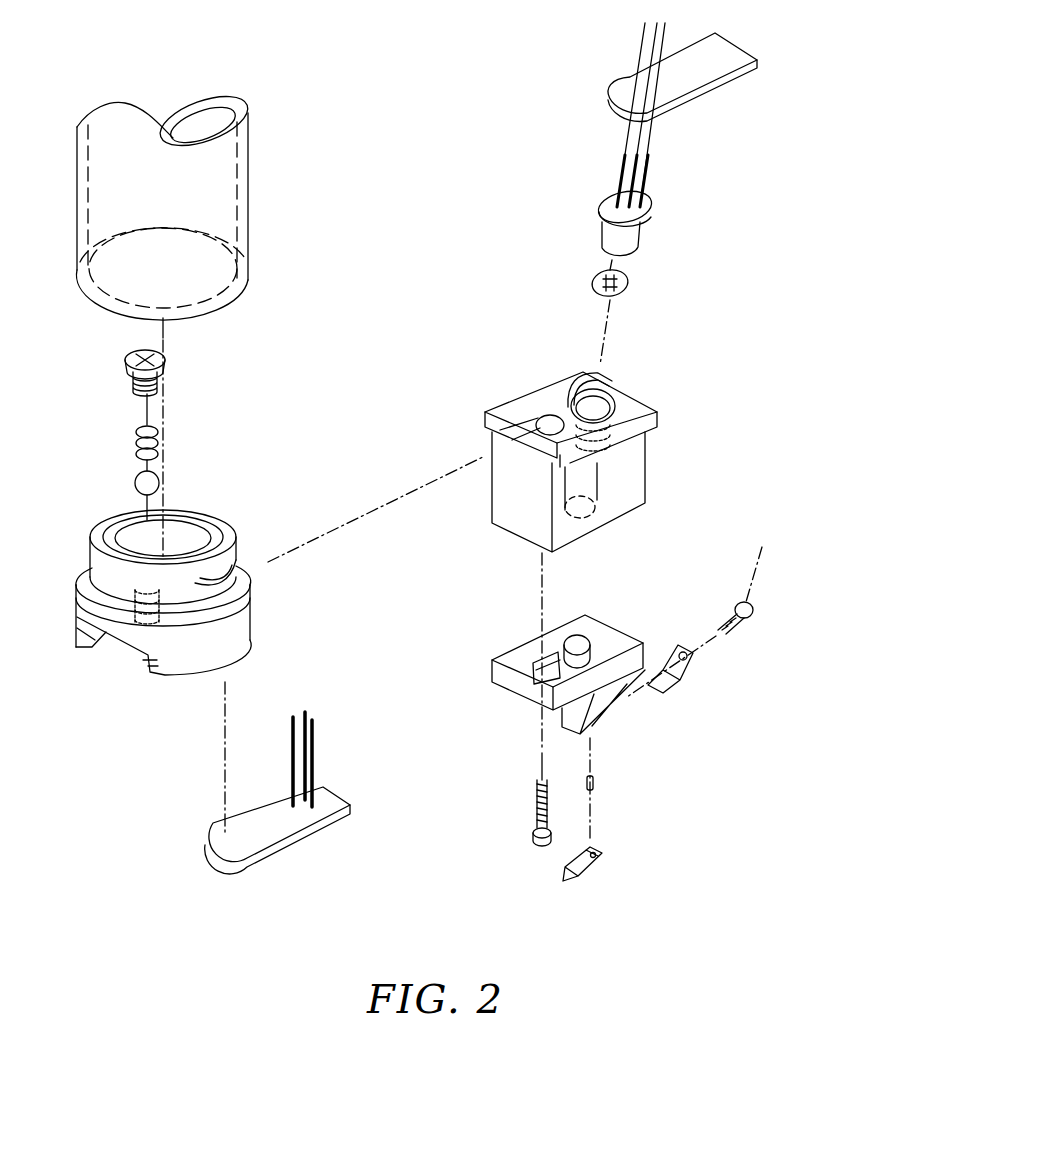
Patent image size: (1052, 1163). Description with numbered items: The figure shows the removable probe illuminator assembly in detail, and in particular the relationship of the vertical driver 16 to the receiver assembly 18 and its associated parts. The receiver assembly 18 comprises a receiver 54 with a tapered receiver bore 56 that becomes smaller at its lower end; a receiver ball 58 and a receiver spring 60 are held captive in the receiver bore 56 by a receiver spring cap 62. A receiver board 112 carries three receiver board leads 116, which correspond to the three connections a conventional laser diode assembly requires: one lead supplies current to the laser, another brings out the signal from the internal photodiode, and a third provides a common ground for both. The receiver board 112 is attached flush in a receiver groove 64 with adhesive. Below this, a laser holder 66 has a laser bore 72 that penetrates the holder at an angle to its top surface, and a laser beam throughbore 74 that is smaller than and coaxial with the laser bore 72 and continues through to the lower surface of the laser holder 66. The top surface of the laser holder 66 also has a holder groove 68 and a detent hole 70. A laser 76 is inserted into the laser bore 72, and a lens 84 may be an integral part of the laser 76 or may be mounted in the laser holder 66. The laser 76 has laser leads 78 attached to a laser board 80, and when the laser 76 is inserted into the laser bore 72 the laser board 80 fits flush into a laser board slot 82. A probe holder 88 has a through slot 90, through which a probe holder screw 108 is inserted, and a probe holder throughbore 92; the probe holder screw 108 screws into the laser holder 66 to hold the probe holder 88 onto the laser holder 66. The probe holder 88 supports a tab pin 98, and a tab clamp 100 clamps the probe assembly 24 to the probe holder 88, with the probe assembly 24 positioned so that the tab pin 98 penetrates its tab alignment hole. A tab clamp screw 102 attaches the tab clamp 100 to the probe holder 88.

The vertical driver 16 is at (250, 187).
The receiver assembly 18 is at (240, 500).
The probe assembly 24 is at (630, 845).
The receiver 54 is at (194, 583).
The receiver bore 56 is at (130, 590).
The receiver ball 58 is at (135, 483).
The receiver spring 60 is at (135, 448).
The receiver spring cap 62 is at (127, 363).
The receiver groove 64 is at (212, 578).
The laser holder 66 is at (581, 441).
The holder groove 68 is at (536, 418).
The detent hole 70 is at (557, 417).
The laser bore 72 is at (613, 393).
The laser beam throughbore 74 is at (600, 463).
The laser 76 is at (642, 238).
The laser leads 78 is at (645, 180).
The laser board 80 is at (704, 115).
The laser board slot 82 is at (587, 395).
The lens 84 is at (628, 282).
The probe holder 88 is at (579, 656).
The through slot 90 is at (540, 660).
The probe holder throughbore 92 is at (580, 637).
The tab pin 98 is at (597, 780).
The tab clamp 100 is at (693, 663).
The tab clamp screw 102 is at (767, 581).
The probe holder screw 108 is at (535, 803).
The receiver board 112 is at (307, 799).
The receiver board leads 116 is at (313, 745).